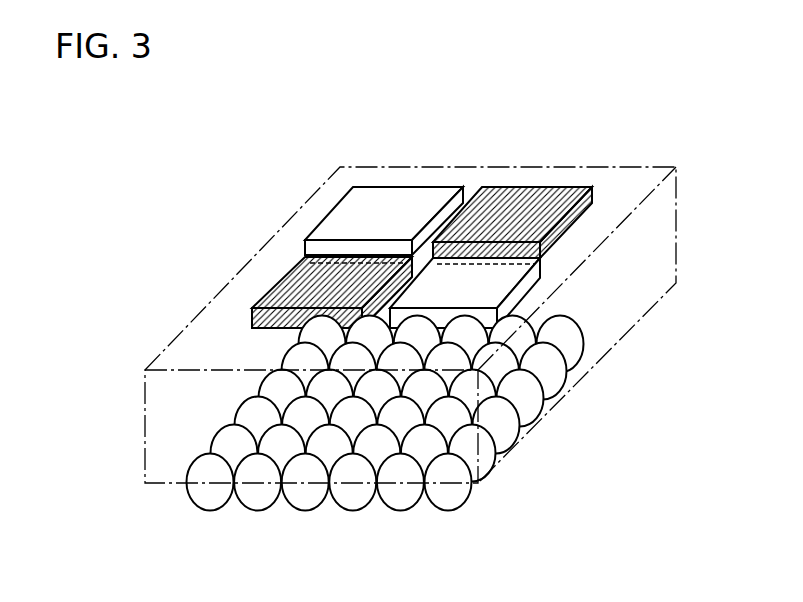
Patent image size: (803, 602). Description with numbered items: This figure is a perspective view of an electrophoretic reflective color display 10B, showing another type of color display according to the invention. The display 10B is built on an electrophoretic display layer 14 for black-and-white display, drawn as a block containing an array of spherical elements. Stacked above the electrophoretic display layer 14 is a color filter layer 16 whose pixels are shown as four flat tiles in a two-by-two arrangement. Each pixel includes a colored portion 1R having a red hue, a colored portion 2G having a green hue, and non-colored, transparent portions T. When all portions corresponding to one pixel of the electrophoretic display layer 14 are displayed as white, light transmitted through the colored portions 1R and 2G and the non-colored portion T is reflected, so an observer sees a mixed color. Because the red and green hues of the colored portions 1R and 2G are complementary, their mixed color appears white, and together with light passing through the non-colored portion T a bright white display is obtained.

The non-colored portion T is at (353, 207).
The colored portion having a green hue 2G is at (293, 277).
The colored portion having a red hue 1R is at (487, 202).
The color filter layer 16 is at (598, 190).
The electrophoretic display layer 14 is at (210, 511).
The electrophoretic reflective color display 10B is at (656, 320).